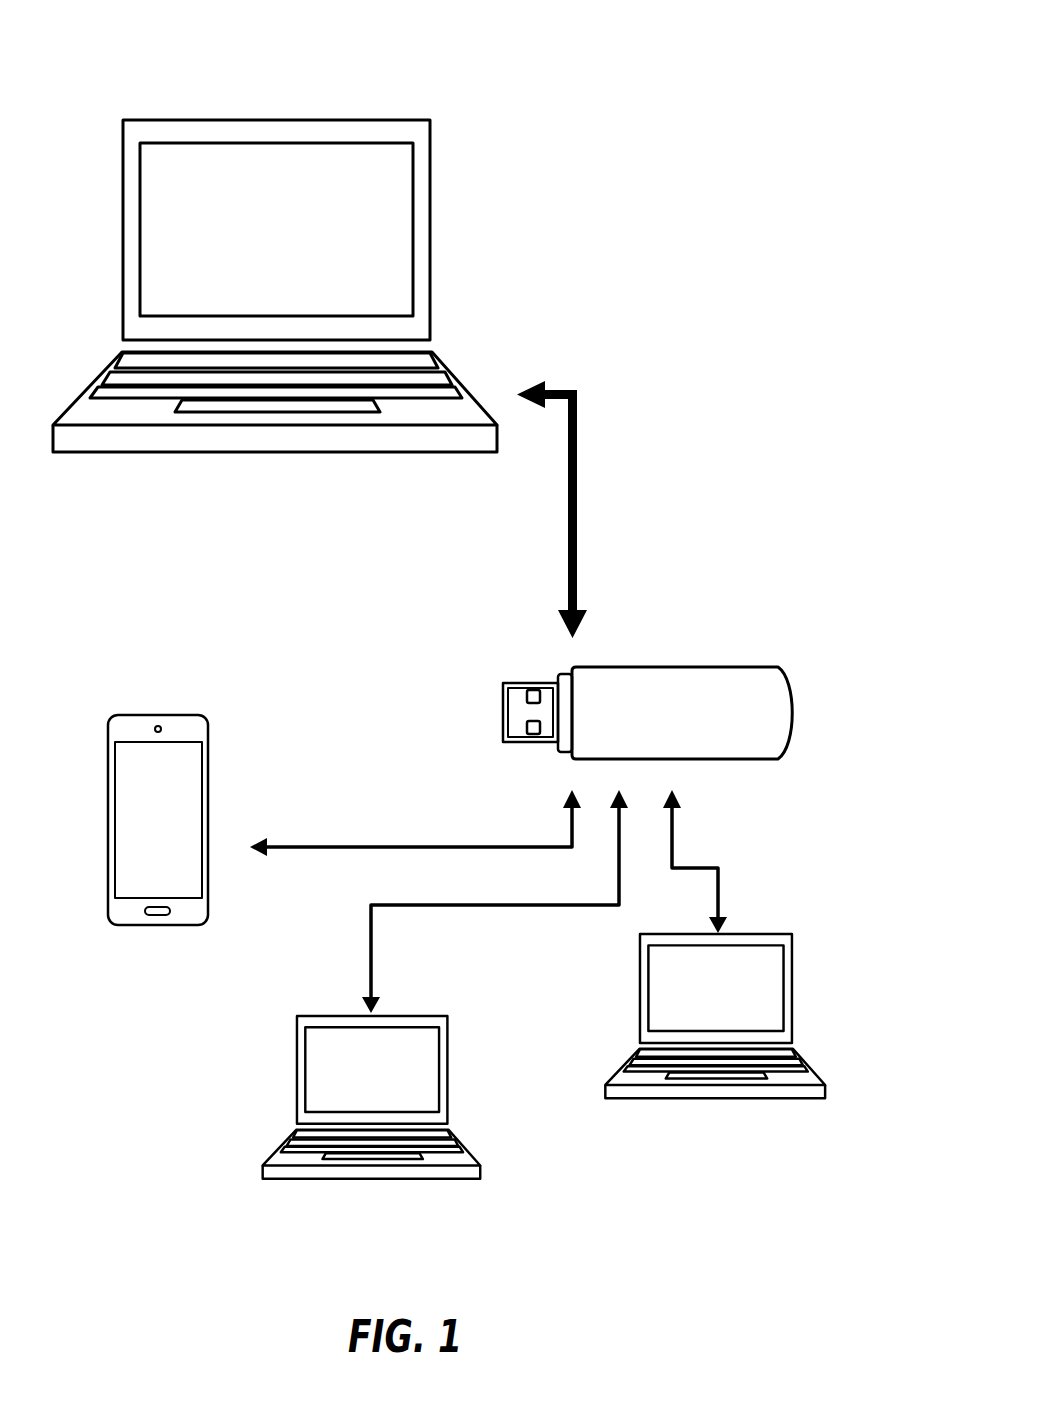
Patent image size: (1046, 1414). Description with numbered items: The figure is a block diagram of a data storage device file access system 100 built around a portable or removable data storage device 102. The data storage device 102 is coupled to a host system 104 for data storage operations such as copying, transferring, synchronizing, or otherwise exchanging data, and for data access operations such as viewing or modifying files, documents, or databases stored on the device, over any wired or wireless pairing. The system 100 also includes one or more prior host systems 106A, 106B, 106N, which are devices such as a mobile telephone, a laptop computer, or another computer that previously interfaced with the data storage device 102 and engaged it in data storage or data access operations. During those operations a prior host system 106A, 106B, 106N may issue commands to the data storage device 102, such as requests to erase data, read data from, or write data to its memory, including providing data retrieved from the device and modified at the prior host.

The data storage device file access system 100 is at (677, 30).
The data storage device 102 is at (766, 665).
The host system 104 is at (424, 118).
The prior host system 106A is at (184, 713).
The prior host system 106B is at (428, 1015).
The prior host system 106N is at (763, 933).